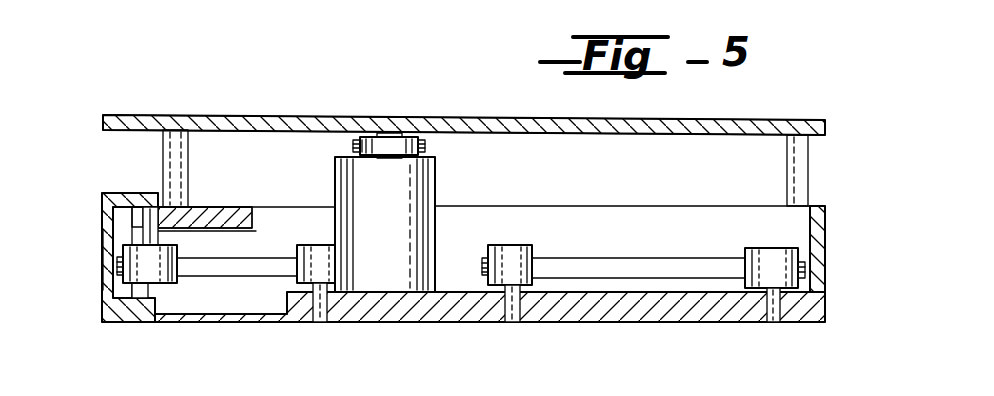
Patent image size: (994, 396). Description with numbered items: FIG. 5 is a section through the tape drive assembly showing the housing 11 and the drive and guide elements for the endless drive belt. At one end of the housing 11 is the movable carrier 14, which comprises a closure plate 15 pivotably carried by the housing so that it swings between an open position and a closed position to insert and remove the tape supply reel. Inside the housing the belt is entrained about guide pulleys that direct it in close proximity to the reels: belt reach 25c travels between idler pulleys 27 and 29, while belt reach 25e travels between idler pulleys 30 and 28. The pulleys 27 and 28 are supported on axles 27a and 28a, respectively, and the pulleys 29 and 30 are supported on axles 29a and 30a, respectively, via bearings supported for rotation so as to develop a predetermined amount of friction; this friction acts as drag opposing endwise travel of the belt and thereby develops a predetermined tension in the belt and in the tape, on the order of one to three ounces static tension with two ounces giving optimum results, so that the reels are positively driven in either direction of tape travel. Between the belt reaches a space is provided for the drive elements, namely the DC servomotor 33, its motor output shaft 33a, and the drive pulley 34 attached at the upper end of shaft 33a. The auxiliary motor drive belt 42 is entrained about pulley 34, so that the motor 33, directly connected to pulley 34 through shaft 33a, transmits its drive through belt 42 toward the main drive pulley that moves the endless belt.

The housing 11 is at (832, 249).
The movable carrier 14 is at (97, 258).
The closure plate 15 is at (102, 208).
The belt reach 25c is at (268, 277).
The belt reach 25e is at (608, 270).
The idler pulley 27 is at (157, 275).
The axle 27a is at (150, 217).
The idler pulley 28 is at (770, 256).
The axle 28a is at (776, 323).
The idler pulley 29 is at (304, 252).
The axle 29a is at (319, 323).
The idler pulley 30 is at (511, 258).
The axle 30a is at (518, 323).
The DC servomotor 33 is at (398, 215).
The motor output shaft 33a is at (383, 134).
The drive pulley 34 is at (364, 139).
The auxiliary motor drive belt 42 is at (426, 146).